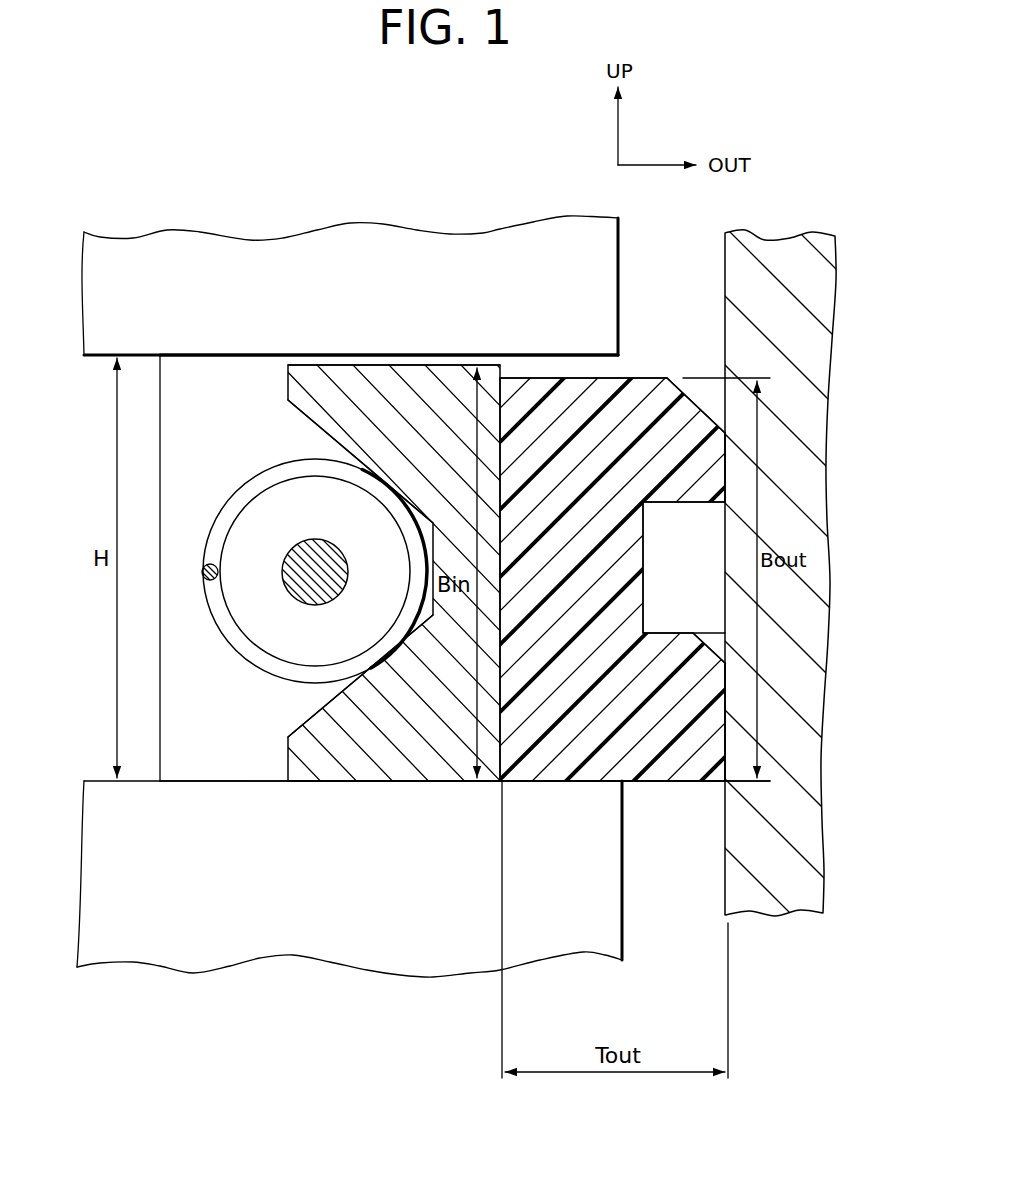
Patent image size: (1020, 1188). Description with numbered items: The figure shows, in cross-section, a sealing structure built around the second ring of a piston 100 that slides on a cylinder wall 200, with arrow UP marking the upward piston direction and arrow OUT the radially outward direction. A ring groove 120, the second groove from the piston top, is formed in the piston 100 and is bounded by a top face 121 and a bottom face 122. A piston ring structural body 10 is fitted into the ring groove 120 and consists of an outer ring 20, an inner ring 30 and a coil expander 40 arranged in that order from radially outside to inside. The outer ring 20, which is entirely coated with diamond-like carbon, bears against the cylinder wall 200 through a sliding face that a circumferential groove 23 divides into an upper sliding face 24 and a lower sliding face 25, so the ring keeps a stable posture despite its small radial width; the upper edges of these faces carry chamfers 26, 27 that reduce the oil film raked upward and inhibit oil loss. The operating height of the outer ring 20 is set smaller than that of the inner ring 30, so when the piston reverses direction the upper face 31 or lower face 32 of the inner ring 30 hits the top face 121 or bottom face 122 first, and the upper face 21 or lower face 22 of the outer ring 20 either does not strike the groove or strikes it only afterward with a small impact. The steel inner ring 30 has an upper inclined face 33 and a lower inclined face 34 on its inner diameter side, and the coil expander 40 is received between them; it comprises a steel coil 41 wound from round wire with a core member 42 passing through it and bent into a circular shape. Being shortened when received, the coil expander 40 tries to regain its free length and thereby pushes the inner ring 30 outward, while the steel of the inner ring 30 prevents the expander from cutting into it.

The piston ring structural body 10 is at (450, 566).
The outer ring 20 is at (697, 782).
The upper face of the outer ring 21 is at (648, 376).
The lower face of the outer ring 22 is at (643, 785).
The groove 23 is at (687, 587).
The upper sliding face 24 is at (729, 470).
The lower sliding face 25 is at (729, 735).
The chamfer 26 is at (703, 405).
The chamfer 27 is at (719, 645).
The inner ring 30 is at (400, 782).
The upper face of the inner ring 31 is at (360, 354).
The lower face of the inner ring 32 is at (360, 784).
The upper inclined face 33 is at (321, 435).
The lower inclined face 34 is at (304, 715).
The coil expander 40 is at (295, 583).
The steel coil 41 is at (233, 510).
The core member 42 is at (303, 582).
The piston 100 is at (473, 262).
The ring groove 120 is at (219, 380).
The top face of the ring groove 121 is at (277, 360).
The bottom face of the ring groove 122 is at (215, 779).
The cylinder wall 200 is at (780, 258).